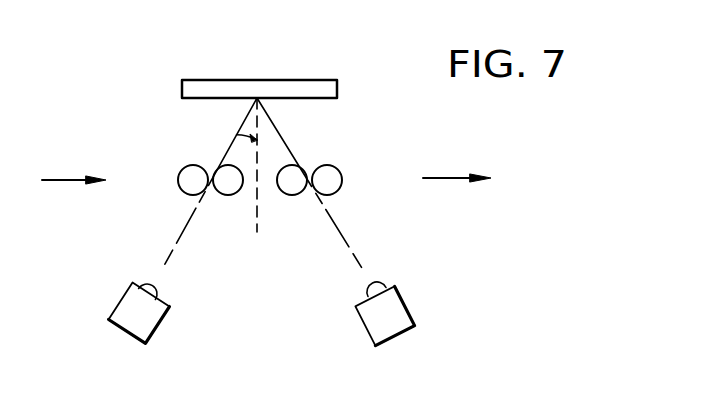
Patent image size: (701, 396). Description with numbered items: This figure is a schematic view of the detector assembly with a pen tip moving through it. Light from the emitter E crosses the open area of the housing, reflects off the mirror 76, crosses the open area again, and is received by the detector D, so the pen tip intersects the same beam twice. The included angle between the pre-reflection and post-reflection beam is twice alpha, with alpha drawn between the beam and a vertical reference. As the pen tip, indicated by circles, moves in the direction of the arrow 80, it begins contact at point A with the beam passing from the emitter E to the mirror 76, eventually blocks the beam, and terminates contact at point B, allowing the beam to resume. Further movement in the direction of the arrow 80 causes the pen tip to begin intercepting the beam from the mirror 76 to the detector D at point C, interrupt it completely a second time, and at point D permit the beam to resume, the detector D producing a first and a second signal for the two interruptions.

The mirror 76 is at (232, 87).
The arrow 80 is at (441, 178).
The half included angle alpha is at (230, 124).
The point A is at (185, 168).
The point B is at (226, 200).
The point C is at (292, 200).
The detector D is at (448, 295).
The emitter E is at (150, 312).